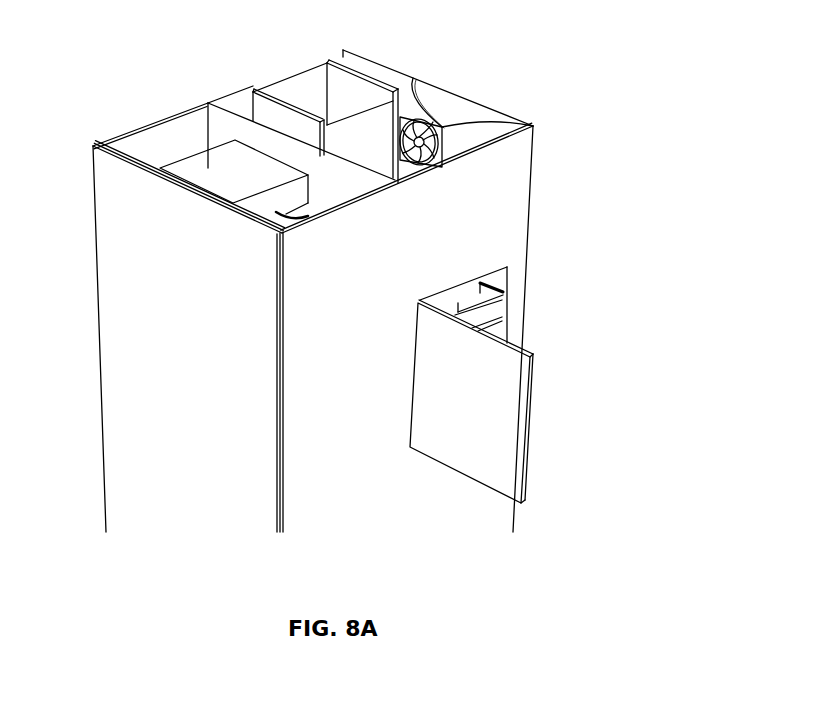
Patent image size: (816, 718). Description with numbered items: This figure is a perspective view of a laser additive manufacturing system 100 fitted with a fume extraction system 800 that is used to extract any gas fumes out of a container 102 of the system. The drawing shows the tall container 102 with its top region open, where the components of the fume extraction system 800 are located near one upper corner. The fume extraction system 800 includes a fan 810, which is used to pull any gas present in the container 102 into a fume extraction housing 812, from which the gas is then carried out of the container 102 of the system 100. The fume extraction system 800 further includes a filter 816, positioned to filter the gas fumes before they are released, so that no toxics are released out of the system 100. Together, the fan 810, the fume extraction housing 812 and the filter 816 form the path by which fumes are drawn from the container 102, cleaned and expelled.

The laser additive manufacturing system 100 is at (580, 98).
The container 102 is at (128, 230).
The fume extraction system 800 is at (455, 55).
The fan 810 is at (414, 122).
The fume extraction housing 812 is at (478, 133).
The filter 816 is at (462, 103).